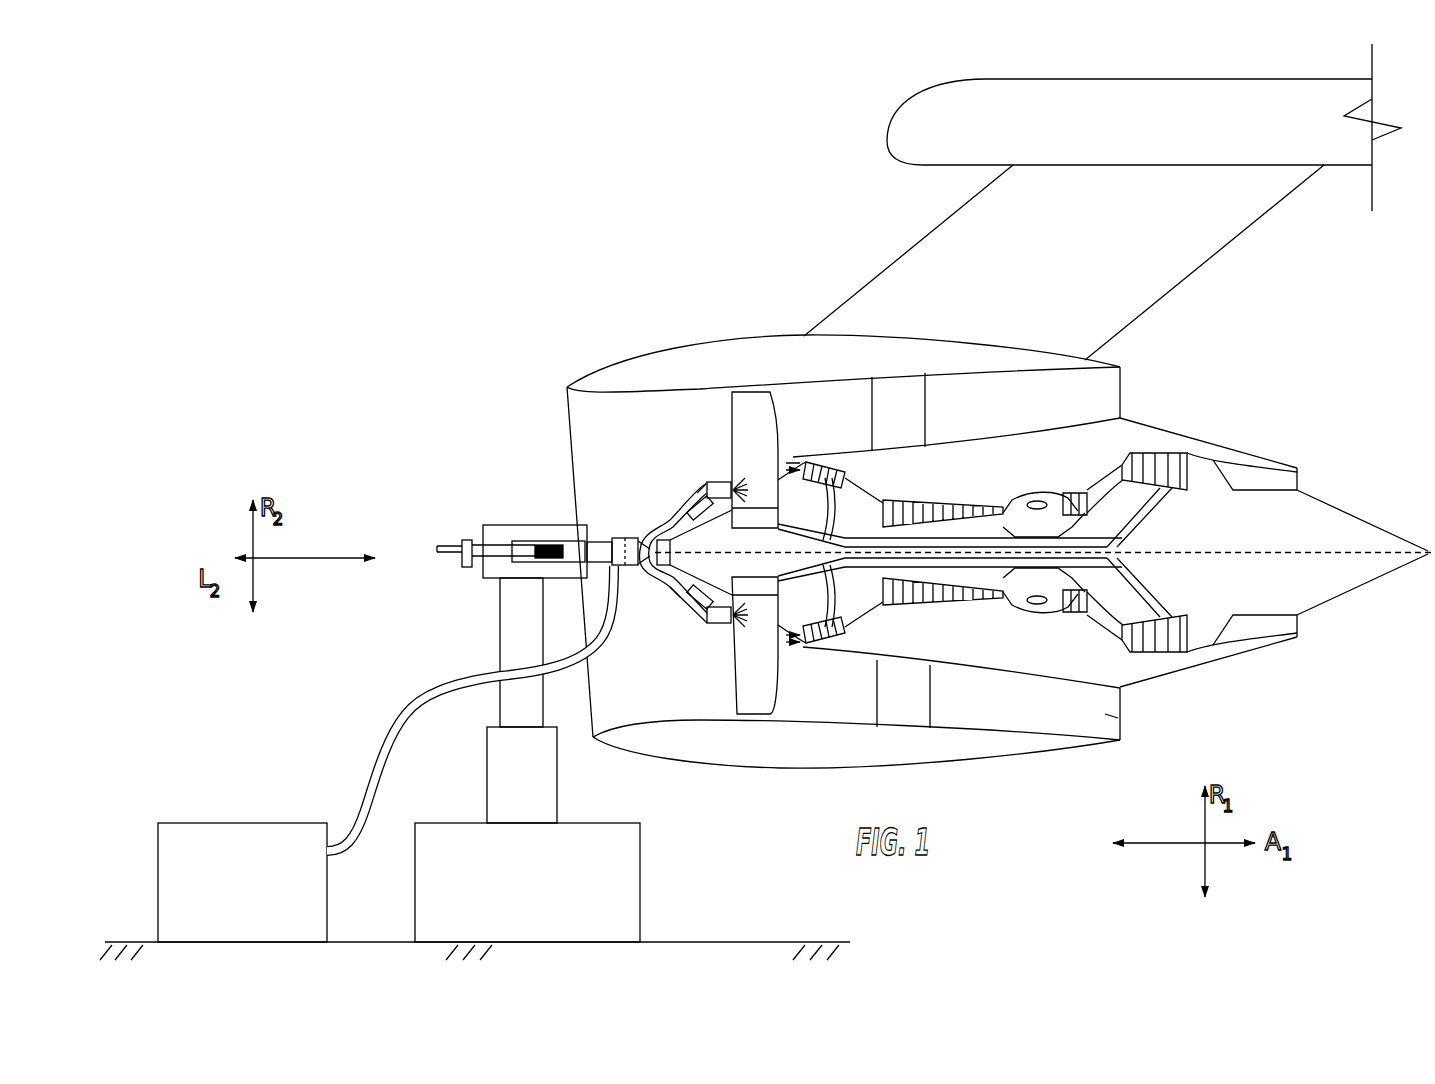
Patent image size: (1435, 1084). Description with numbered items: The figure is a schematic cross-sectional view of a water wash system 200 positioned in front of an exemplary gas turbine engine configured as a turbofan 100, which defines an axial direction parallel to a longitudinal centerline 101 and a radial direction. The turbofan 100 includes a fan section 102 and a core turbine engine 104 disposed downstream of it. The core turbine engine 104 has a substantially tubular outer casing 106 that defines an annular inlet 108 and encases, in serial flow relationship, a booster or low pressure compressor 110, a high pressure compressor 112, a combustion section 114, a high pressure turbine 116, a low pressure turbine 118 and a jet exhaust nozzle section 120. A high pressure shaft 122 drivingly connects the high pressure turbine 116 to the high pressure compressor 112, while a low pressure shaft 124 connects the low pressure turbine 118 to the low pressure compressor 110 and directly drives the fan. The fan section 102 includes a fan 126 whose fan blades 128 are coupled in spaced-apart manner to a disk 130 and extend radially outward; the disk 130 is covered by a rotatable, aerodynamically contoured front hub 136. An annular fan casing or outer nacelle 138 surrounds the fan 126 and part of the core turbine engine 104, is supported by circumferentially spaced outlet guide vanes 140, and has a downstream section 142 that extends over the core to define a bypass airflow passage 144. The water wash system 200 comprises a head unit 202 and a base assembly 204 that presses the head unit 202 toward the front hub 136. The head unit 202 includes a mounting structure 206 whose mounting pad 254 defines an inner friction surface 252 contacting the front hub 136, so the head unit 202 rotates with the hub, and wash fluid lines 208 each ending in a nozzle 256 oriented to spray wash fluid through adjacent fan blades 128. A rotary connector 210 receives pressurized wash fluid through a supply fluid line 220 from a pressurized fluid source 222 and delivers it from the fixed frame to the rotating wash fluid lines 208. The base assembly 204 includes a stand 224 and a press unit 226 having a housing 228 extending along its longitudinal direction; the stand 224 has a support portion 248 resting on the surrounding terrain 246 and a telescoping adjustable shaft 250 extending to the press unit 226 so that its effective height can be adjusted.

The turbofan 100 is at (748, 284).
The longitudinal centerline 101 is at (1277, 552).
The fan section 102 is at (808, 413).
The core turbine engine 104 is at (1068, 442).
The outer casing 106 is at (1157, 433).
The annular inlet 108 is at (806, 640).
The low pressure compressor 110 is at (872, 626).
The high pressure compressor 112 is at (951, 610).
The combustion section 114 is at (1005, 611).
The high pressure turbine 116 is at (1074, 626).
The low pressure turbine 118 is at (1167, 655).
The jet exhaust nozzle section 120 is at (1242, 638).
The high pressure shaft 122 is at (1078, 512).
The low pressure shaft 124 is at (1147, 529).
The fan 126 is at (788, 410).
The fan blades 128 is at (745, 418).
The disk 130 is at (757, 598).
The front hub 136 is at (697, 600).
The outer nacelle 138 is at (770, 765).
The outlet guide vanes 140 is at (933, 702).
The downstream section 142 is at (1052, 760).
The bypass airflow passage 144 is at (1108, 716).
The water wash system 200 is at (438, 481).
The head unit 202 is at (660, 494).
The base assembly 204 is at (505, 505).
The mounting structure 206 is at (661, 587).
The wash fluid lines 208 is at (672, 498).
The rotary connector 210 is at (620, 527).
The supply fluid line 220 is at (410, 700).
The pressurized fluid source 222 is at (193, 822).
The stand 224 is at (465, 726).
The press unit 226 is at (459, 536).
The housing 228 is at (520, 525).
The surrounding terrain 246 is at (735, 935).
The support portion 248 is at (630, 863).
The adjustable shaft 250 is at (542, 784).
The inner friction surface 252 is at (712, 531).
The mounting pad 254 is at (690, 497).
The nozzle 256 is at (722, 638).